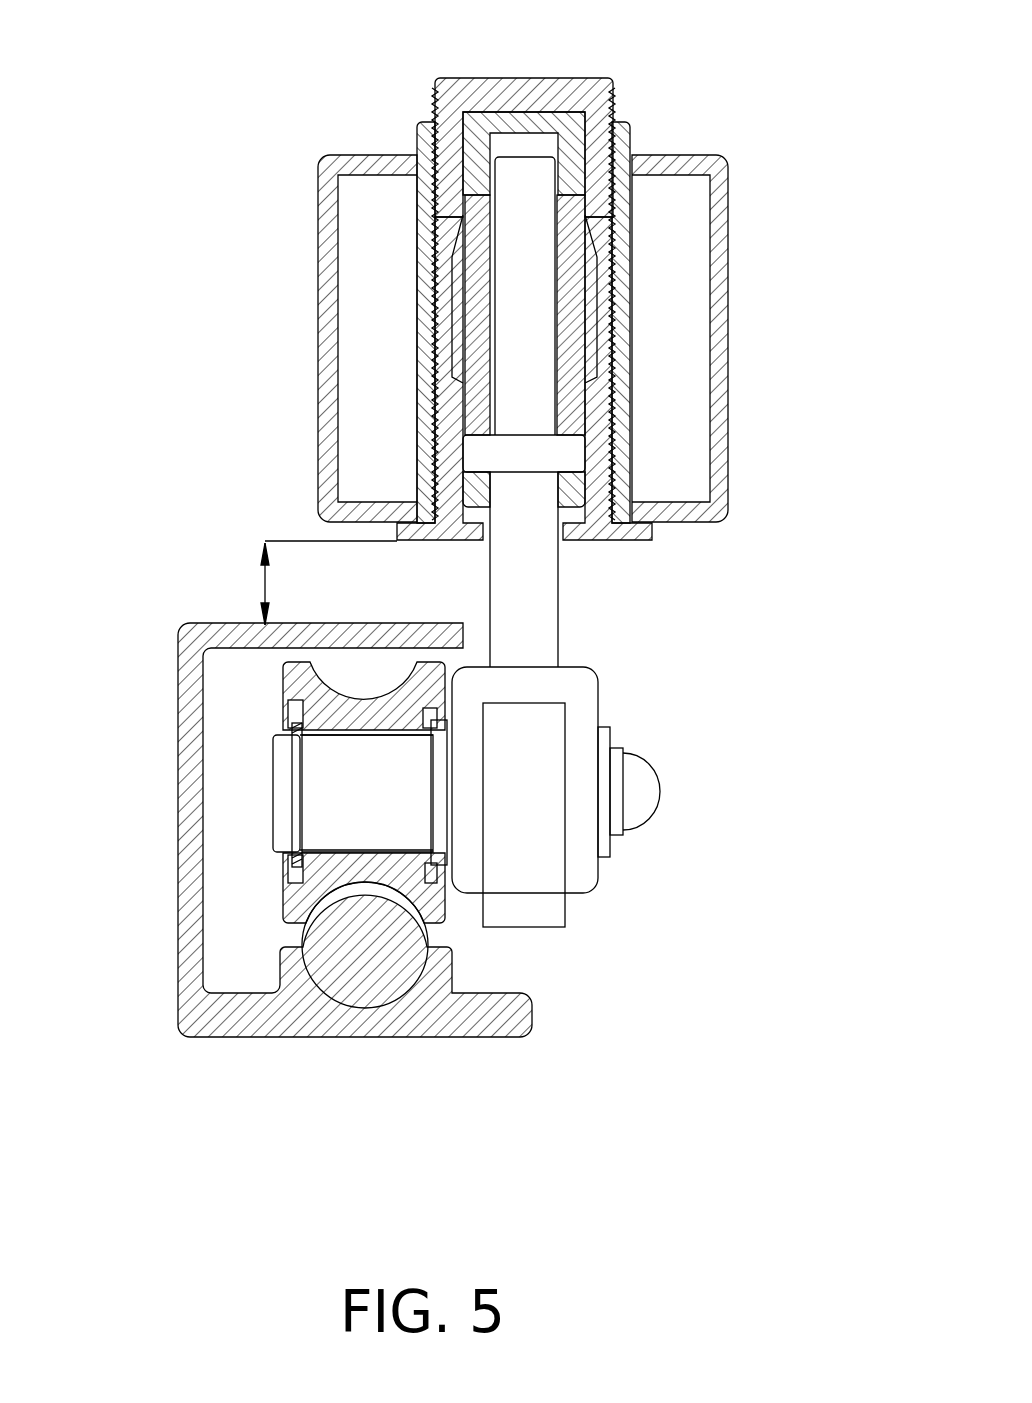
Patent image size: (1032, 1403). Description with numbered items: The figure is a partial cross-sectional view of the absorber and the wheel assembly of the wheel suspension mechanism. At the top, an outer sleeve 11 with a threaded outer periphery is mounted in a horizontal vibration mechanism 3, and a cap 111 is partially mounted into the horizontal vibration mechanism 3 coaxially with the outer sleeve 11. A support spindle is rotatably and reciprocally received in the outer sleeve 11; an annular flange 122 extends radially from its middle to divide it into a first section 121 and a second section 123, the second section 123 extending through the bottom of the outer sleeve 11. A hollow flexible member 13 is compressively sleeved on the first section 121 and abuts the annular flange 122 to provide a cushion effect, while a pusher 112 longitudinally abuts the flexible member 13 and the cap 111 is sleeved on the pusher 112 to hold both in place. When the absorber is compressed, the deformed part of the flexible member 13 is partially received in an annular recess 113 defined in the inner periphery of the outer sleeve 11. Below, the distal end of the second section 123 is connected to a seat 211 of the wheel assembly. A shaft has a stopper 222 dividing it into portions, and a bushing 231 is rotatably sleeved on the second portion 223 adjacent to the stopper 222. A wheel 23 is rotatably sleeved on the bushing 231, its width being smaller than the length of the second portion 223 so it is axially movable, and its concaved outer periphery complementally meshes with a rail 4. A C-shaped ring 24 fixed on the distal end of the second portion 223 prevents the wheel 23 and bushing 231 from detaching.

The horizontal vibration mechanism 3 is at (717, 228).
The outer sleeve 11 is at (597, 427).
The cap 111 is at (580, 78).
The pusher 112 is at (575, 137).
The annular recess 113 is at (573, 310).
The flexible member 13 is at (478, 287).
The first section 121 is at (520, 175).
The annular flange 122 is at (570, 455).
The second section 123 is at (545, 596).
The wheel 23 is at (293, 900).
The rail 4 is at (363, 988).
The bushing 231 is at (345, 707).
The second portion 223 is at (327, 747).
The C-shaped ring 24 is at (295, 782).
The stopper 222 is at (445, 842).
The seat 211 is at (580, 715).